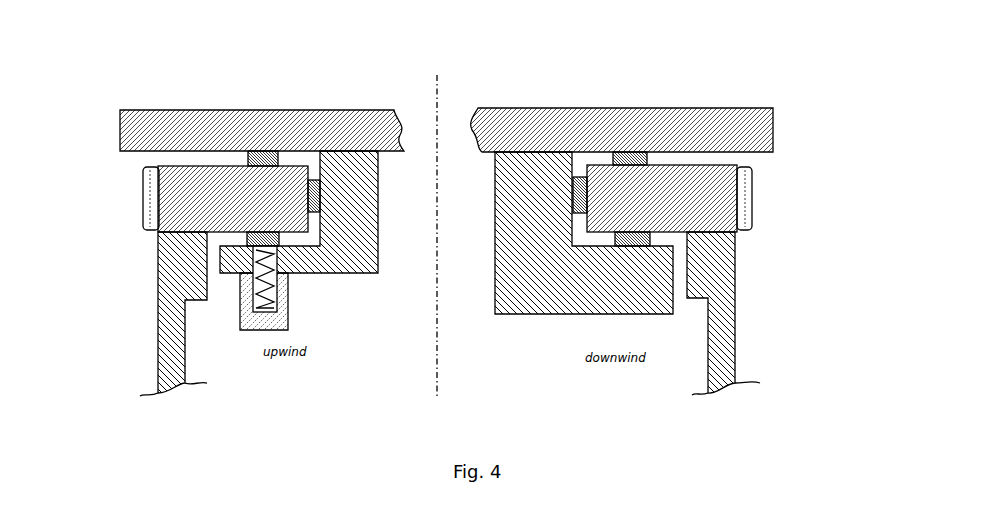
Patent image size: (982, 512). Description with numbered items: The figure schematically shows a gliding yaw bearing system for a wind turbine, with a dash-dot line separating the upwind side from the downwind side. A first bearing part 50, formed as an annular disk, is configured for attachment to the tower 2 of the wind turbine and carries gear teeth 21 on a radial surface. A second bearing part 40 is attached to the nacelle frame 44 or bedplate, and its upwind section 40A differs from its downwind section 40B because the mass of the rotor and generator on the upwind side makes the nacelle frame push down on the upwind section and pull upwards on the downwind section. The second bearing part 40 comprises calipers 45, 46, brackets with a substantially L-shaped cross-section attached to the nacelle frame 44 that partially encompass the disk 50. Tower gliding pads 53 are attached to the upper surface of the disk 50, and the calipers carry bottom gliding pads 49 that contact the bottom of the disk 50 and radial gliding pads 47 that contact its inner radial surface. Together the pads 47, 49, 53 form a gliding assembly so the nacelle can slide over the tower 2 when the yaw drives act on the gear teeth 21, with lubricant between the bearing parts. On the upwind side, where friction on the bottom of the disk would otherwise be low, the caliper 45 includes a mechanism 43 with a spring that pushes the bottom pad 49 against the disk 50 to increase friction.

The tower 2 is at (165, 332).
The gear teeth 21 is at (143, 201).
The second bearing part 40 is at (489, 235).
The upwind section of the second bearing part 40A is at (378, 228).
The downwind section of the second bearing part 40B is at (494, 268).
The mechanism to increase friction 43 is at (250, 332).
The nacelle frame 44 is at (290, 292).
The upwind caliper 45 is at (345, 240).
The downwind caliper 46 is at (500, 315).
The radial gliding pad 47 is at (303, 178).
The bottom gliding pad 49 is at (628, 250).
The first bearing part 50 is at (170, 255).
The tower gliding pad 53 is at (262, 152).